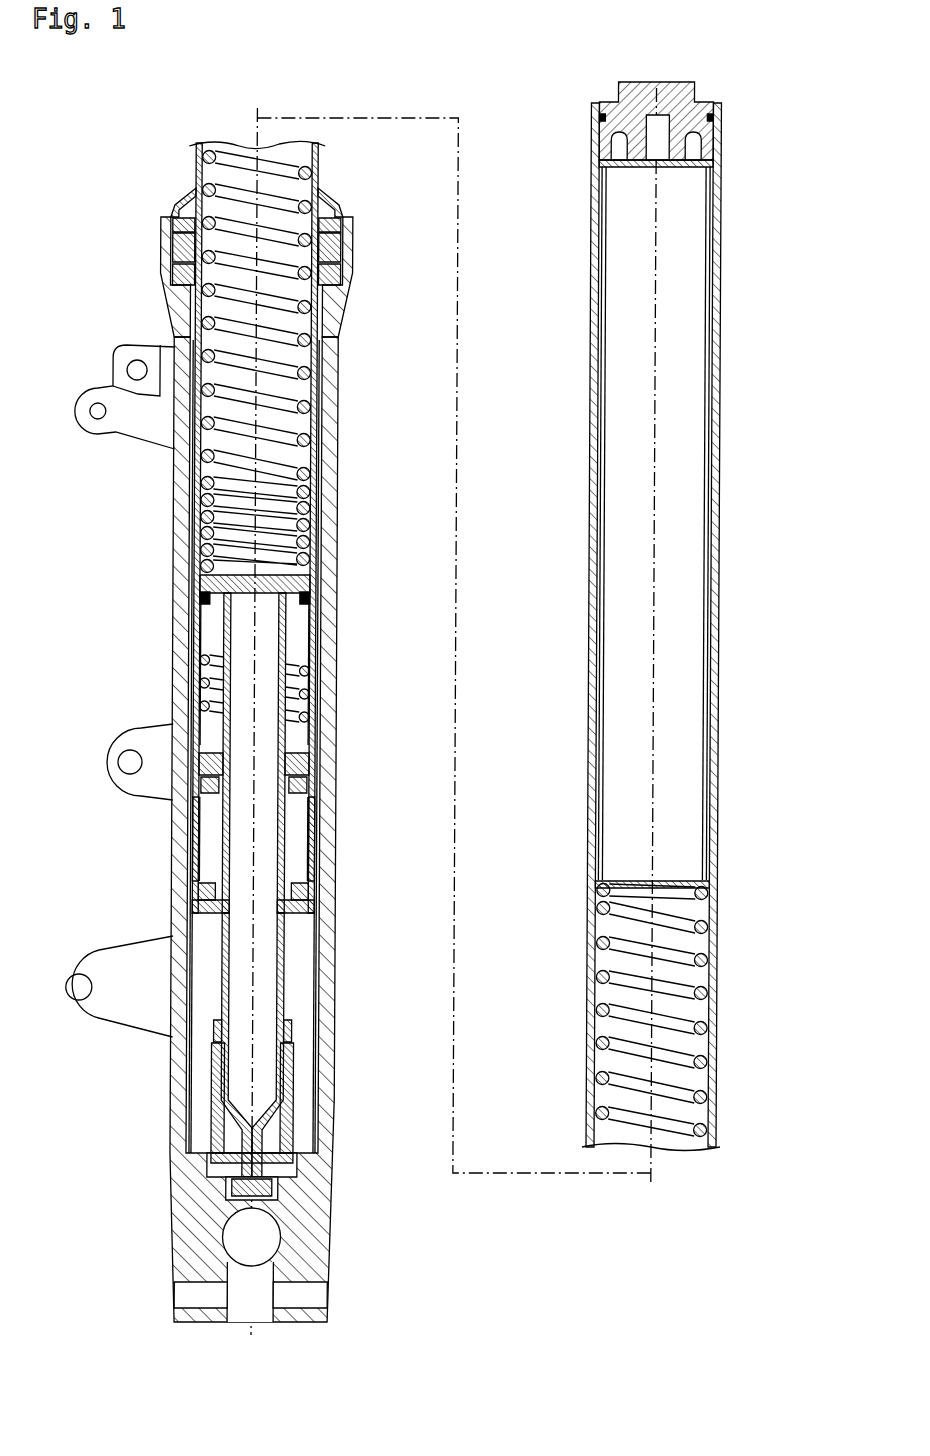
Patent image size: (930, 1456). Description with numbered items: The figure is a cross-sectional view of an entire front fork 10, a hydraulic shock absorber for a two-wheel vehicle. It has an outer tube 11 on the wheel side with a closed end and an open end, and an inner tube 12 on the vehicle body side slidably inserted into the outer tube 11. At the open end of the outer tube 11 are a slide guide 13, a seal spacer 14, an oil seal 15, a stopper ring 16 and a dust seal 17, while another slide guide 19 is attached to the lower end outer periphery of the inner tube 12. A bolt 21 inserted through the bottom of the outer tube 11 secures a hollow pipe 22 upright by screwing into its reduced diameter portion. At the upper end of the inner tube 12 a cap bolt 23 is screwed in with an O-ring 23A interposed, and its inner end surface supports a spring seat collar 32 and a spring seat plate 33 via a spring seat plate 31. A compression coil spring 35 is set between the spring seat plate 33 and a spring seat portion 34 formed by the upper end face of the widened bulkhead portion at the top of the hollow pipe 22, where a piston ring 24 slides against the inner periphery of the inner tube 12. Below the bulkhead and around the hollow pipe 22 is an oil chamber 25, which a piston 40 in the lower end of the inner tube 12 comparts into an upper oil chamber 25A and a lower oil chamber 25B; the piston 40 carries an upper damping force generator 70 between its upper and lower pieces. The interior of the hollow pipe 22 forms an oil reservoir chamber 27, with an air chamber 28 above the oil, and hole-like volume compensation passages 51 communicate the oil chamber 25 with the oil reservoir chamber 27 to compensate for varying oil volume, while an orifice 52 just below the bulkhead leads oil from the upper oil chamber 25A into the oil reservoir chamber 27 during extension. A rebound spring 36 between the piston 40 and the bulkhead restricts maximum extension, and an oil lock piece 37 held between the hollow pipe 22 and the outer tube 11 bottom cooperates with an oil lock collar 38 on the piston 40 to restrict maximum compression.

The front fork 10 is at (149, 141).
The outer tube 11 is at (178, 498).
The inner tube 12 is at (594, 290).
The slide guide 13 is at (168, 292).
The seal spacer 14 is at (178, 270).
The oil seal 15 is at (178, 242).
The stopper ring 16 is at (343, 245).
The dust seal 17 is at (186, 199).
The slide guide 19 is at (180, 863).
The bolt 21 is at (236, 1195).
The hollow pipe 22 is at (232, 1003).
The cap bolt 23 is at (619, 90).
The O-ring 23A is at (716, 118).
The piston ring 24 is at (303, 590).
The oil chamber 25 is at (325, 885).
The upper oil chamber 25A is at (305, 623).
The lower oil chamber 25B is at (306, 963).
The oil reservoir chamber 27 is at (238, 588).
The air chamber 28 is at (698, 1010).
The spring seat plate 31 is at (716, 166).
The spring seat collar 32 is at (712, 270).
The spring seat plate 33 is at (718, 886).
The spring seat portion 34 is at (322, 577).
The compression coil spring 35 is at (718, 958).
The rebound spring 36 is at (225, 688).
The oil lock piece 37 is at (296, 1088).
The oil lock collar 38 is at (310, 887).
The piston 40 is at (309, 848).
The volume compensation passages 51 is at (220, 1030).
The orifice 52 is at (310, 652).
The upper damping force generator 70 is at (328, 764).